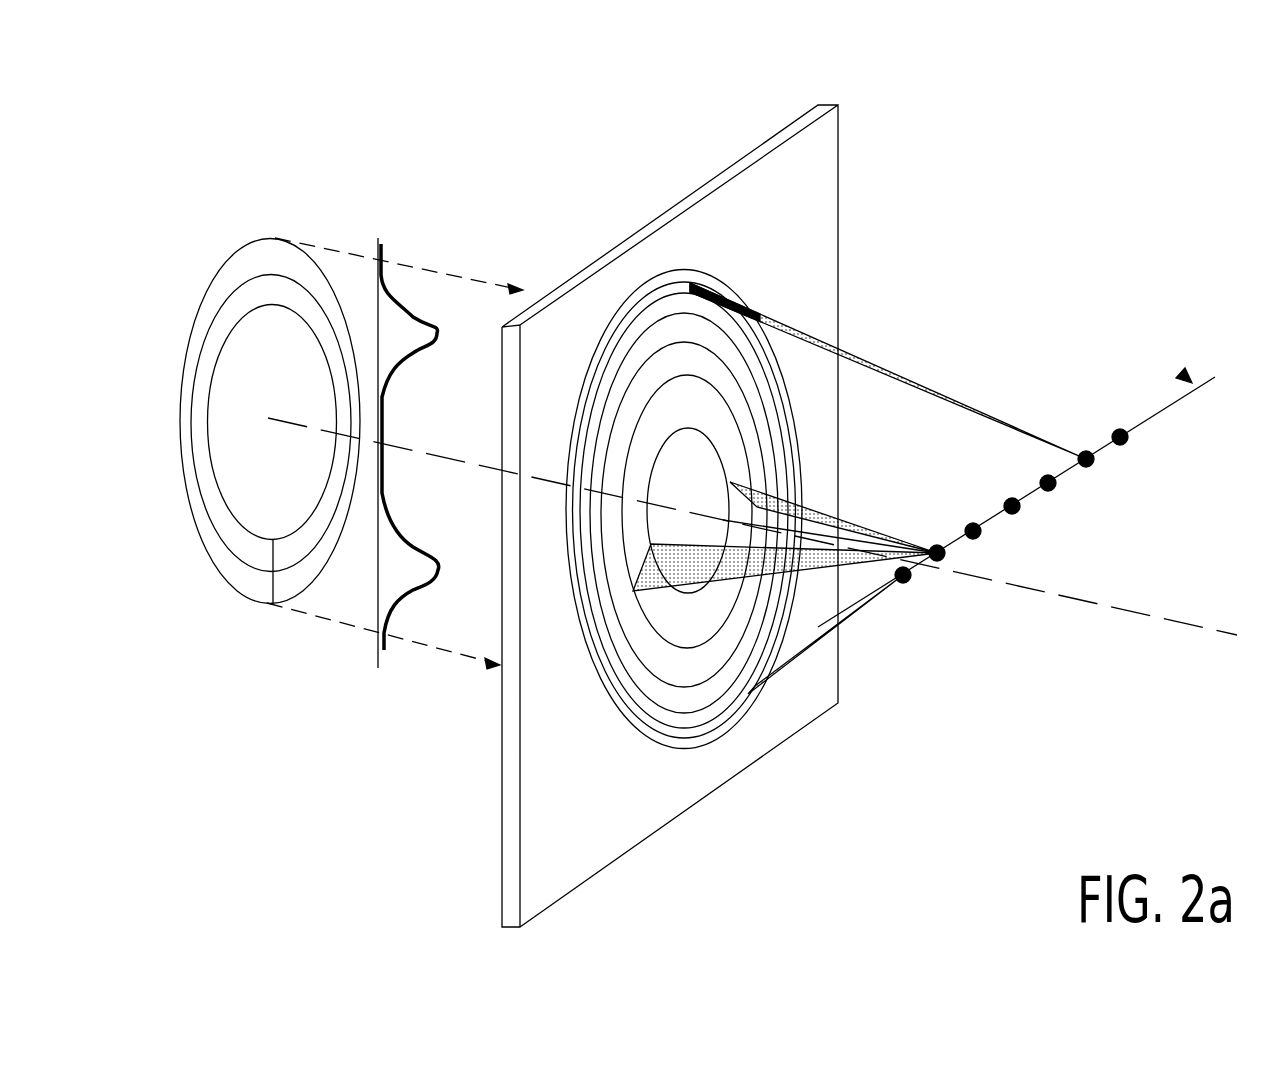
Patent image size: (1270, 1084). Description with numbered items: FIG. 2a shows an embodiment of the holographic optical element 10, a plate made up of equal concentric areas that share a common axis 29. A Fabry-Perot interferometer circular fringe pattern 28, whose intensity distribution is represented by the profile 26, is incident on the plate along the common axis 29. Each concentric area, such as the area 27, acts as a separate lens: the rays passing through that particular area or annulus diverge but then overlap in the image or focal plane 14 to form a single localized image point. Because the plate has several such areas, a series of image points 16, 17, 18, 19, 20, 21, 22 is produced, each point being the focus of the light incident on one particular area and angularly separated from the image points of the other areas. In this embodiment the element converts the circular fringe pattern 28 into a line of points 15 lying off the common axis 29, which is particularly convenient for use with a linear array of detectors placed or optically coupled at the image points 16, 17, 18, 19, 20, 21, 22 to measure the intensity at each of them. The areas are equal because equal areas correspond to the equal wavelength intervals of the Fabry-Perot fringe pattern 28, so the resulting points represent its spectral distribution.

The holographic optical element 10 is at (512, 852).
The image or focal plane 14 is at (1182, 375).
The focal line 15 is at (1180, 400).
The image point 16 is at (903, 583).
The image point 17 is at (937, 561).
The image point 18 is at (973, 539).
The image point 19 is at (1014, 514).
The image point 20 is at (1051, 491).
The image point 21 is at (1089, 467).
The image point 22 is at (1126, 443).
The beam intensity profile 26 is at (383, 230).
The area 27 is at (727, 385).
The Fabry-Perot interferometer circular fringe pattern 28 is at (210, 279).
The common axis 29 is at (1177, 623).